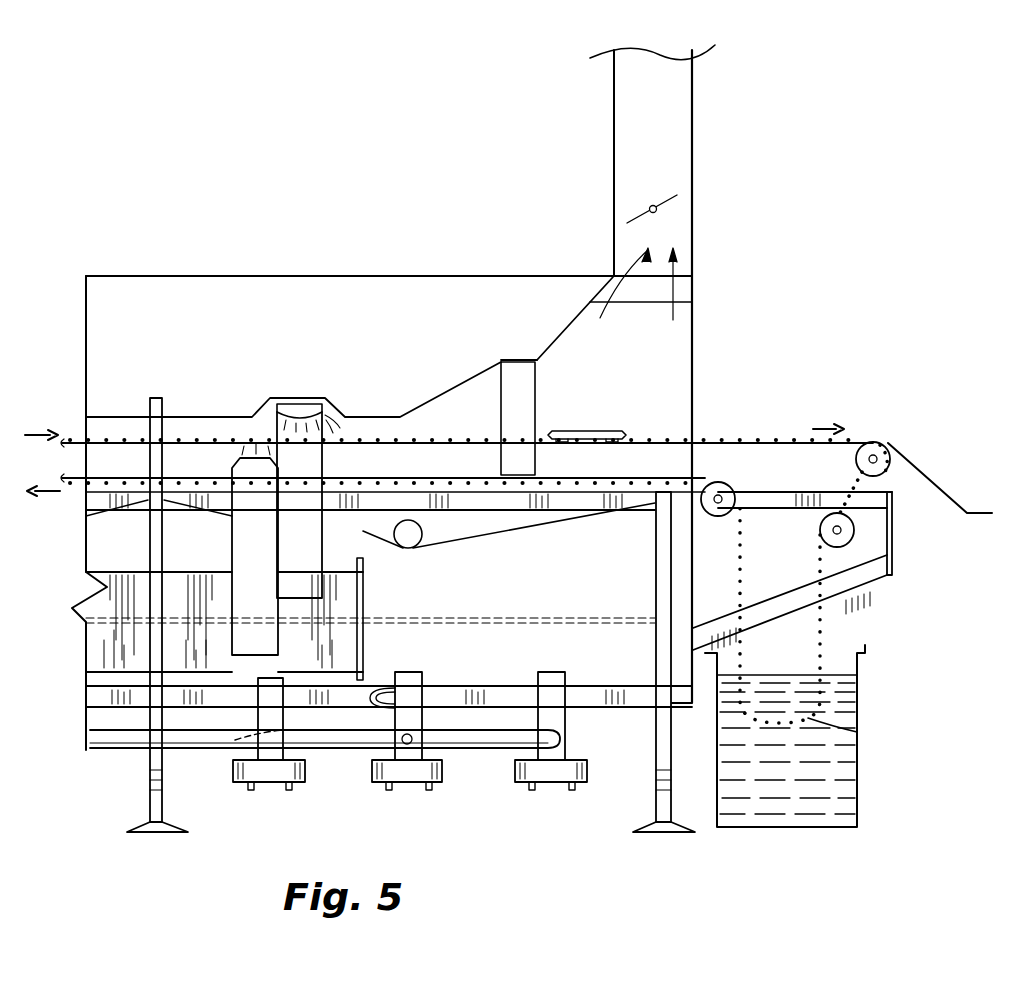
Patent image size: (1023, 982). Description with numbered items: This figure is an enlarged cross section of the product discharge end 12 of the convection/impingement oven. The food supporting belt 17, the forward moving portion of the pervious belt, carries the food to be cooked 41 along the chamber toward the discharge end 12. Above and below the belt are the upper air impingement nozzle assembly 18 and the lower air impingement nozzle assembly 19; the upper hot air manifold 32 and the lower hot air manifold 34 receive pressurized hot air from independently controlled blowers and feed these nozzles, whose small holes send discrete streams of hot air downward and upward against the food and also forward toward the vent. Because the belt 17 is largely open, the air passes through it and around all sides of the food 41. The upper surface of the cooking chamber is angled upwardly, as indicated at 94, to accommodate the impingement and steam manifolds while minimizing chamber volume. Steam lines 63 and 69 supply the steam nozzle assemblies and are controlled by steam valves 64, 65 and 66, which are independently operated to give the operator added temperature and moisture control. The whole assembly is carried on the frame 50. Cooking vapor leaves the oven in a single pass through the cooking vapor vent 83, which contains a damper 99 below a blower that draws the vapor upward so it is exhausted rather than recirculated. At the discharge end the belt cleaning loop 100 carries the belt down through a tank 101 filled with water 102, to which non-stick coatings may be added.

The product discharge end 12 is at (705, 440).
The food supporting belt 17 is at (820, 628).
The upper air impingement nozzle assembly 18 is at (297, 404).
The lower air impingement nozzle assembly 19 is at (240, 456).
The upper hot air manifold 32 is at (95, 592).
The lower hot air manifold 34 is at (98, 650).
The food to be cooked 41 is at (593, 430).
The frame 50 is at (888, 565).
The steam line 63 is at (235, 740).
The steam valve 64 is at (304, 772).
The steam valve 65 is at (444, 774).
The steam valve 66 is at (587, 772).
The steam line 69 is at (100, 752).
The cooking vapor vent 83 is at (692, 128).
The angled upper surface 94 is at (328, 398).
The damper 99 is at (640, 218).
The belt cleaning loop 100 is at (858, 738).
The tank 101 is at (865, 654).
The water 102 is at (845, 690).